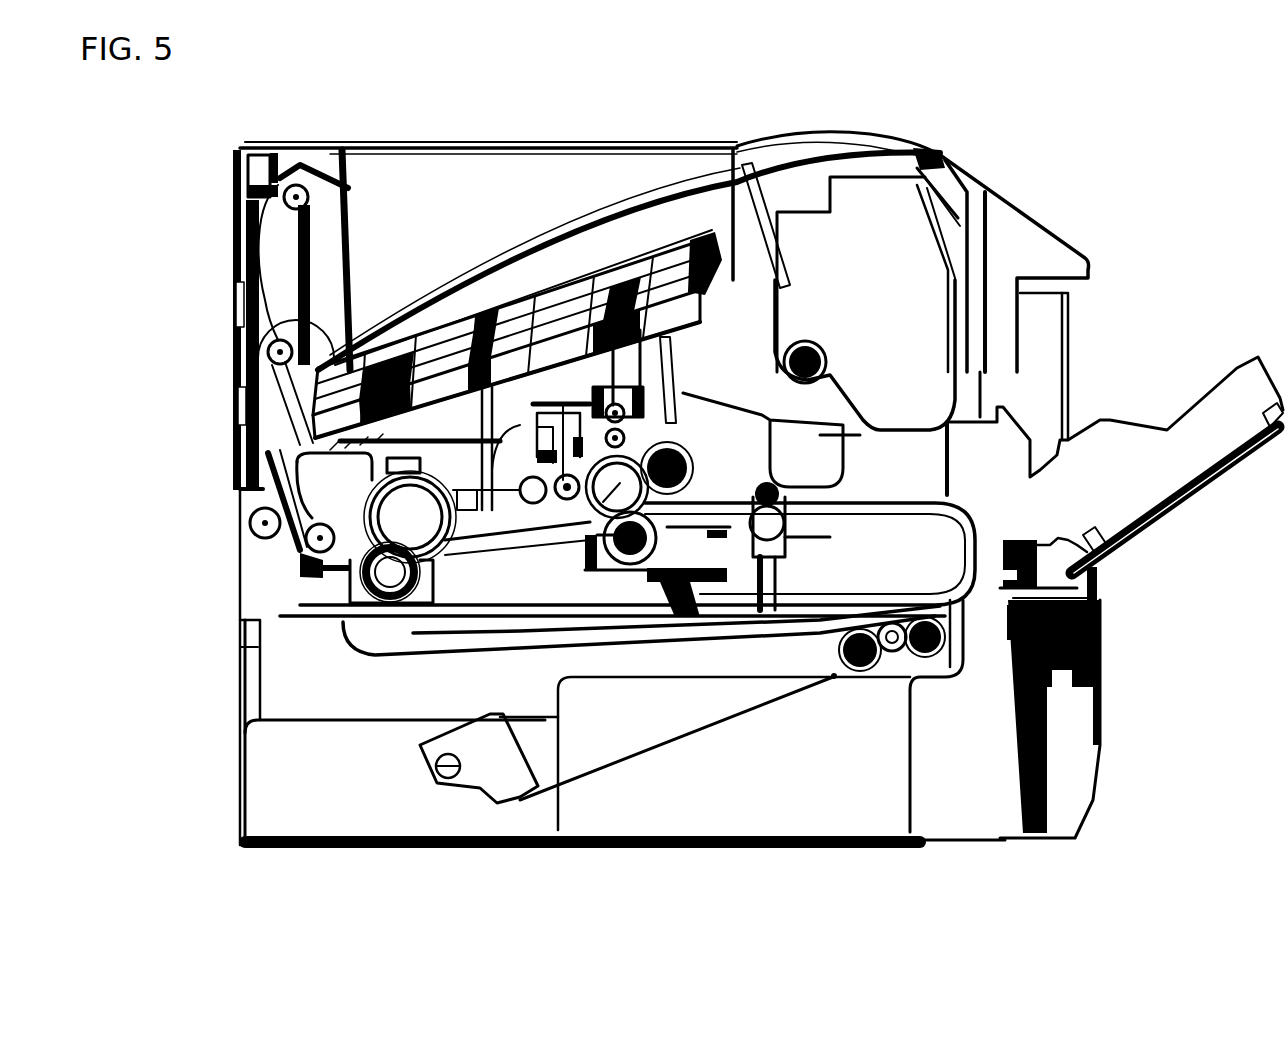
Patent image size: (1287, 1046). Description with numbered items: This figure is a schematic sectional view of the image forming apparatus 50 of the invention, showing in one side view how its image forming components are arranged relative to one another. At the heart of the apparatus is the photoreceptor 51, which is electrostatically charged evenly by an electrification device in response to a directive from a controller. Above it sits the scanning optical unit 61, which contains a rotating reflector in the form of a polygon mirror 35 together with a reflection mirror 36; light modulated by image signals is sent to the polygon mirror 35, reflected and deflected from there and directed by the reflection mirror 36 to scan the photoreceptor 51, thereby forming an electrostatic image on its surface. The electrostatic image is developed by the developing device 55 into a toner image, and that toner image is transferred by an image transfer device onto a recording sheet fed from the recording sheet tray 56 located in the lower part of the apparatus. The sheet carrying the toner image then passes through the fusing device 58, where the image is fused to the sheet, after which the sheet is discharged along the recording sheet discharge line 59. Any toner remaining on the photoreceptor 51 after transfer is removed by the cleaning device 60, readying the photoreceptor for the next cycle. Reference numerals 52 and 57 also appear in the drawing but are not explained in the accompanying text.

The image forming apparatus 50 is at (1057, 206).
The scanning optical unit 61 is at (565, 293).
The recording sheet discharge line 59 is at (634, 248).
The reflection mirror 36 is at (696, 262).
The polygon mirror 35 is at (233, 352).
The fusing device 58 is at (400, 522).
The cleaning device 60 is at (563, 500).
The photoreceptor 51 is at (600, 505).
The developing device 52 is at (645, 447).
The transfer roller 57 is at (637, 570).
The developing device 55 is at (708, 500).
The recording sheet tray 56 is at (272, 777).